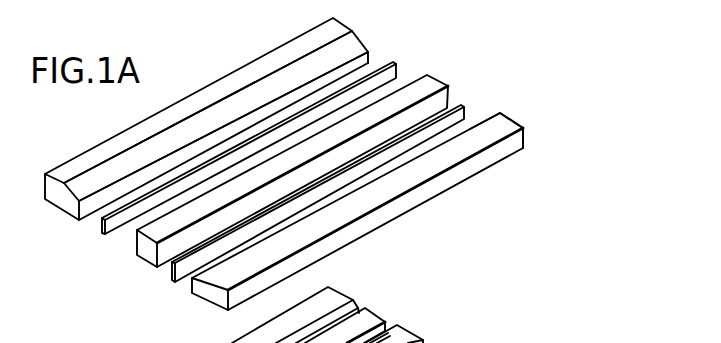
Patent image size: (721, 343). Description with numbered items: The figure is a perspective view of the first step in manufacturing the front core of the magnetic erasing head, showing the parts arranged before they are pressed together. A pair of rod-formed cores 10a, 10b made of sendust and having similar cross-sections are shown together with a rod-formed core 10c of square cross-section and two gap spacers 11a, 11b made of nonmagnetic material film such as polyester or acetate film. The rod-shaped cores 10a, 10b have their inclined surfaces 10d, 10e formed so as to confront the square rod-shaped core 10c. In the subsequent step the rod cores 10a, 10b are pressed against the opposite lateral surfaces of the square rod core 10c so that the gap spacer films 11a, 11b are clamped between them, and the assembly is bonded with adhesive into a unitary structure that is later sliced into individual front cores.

The rod-formed core 10a is at (60, 203).
The rod-formed core 10b is at (208, 297).
The rod-formed core with square cross-section 10c is at (143, 253).
The inclined surface 10d is at (108, 173).
The inclined surface 10e is at (479, 124).
The gap spacer 11a is at (107, 228).
The gap spacer 11b is at (173, 280).